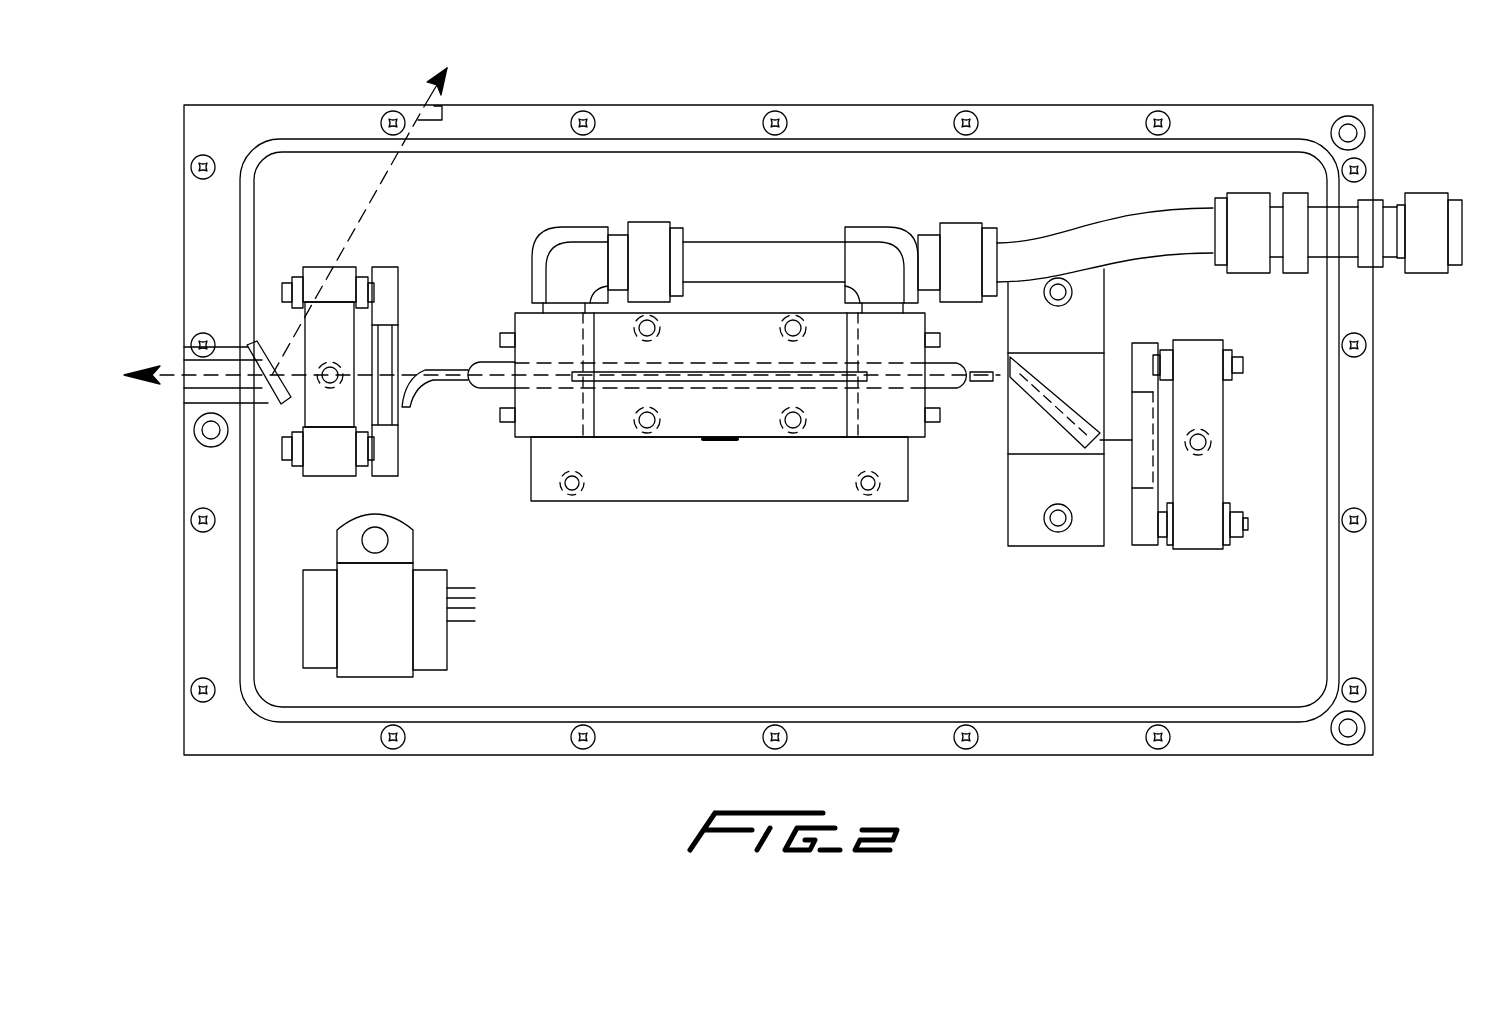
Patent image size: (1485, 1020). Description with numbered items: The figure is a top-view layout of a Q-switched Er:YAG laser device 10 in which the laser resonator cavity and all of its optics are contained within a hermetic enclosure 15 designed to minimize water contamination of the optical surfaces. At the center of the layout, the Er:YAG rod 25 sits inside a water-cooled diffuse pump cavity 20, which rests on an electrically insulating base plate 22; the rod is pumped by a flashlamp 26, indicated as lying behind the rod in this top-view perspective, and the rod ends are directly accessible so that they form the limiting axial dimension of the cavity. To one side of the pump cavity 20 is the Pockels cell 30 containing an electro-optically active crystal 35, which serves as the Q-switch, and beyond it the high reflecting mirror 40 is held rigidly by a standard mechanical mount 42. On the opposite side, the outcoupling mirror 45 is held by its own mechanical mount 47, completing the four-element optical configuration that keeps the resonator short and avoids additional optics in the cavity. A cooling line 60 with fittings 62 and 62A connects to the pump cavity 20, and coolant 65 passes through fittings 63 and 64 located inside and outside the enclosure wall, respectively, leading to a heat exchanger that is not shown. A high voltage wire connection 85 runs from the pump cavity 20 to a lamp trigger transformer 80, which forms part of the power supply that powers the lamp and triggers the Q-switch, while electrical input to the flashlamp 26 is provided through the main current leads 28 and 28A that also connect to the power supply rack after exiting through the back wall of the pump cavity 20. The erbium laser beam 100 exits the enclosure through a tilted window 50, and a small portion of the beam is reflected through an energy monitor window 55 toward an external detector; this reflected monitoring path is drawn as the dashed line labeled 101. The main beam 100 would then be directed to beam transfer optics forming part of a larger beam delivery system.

The Q-switched Er:YAG laser device 10 is at (372, 765).
The hermetic enclosure 15 is at (933, 708).
The pump cavity 20 is at (521, 437).
The base plate 22 is at (908, 468).
The Er:YAG rod 25 is at (765, 382).
The flashlamp 26 is at (953, 386).
The main current lead 28 is at (440, 360).
The main current lead 28A is at (983, 370).
The Pockels cell 30 is at (1010, 510).
The electro-optically active crystal 35 is at (1012, 412).
The high reflecting mirror 40 is at (1135, 413).
The mechanical mount 42 is at (1200, 350).
The outcoupling mirror 45 is at (398, 420).
The mechanical mount 47 is at (312, 462).
The tilted window 50 is at (270, 345).
The energy monitor window 55 is at (412, 104).
The cooling line 60 is at (803, 245).
The fitting 62 is at (575, 235).
The fitting 62A is at (965, 230).
The fitting 63 is at (1240, 195).
The fitting 64 is at (1427, 205).
The coolant 65 is at (1115, 230).
The lamp trigger transformer 80 is at (435, 652).
The high voltage wire connection 85 is at (718, 441).
The erbium laser beam 100 is at (172, 378).
The reflected beam 101 is at (366, 212).